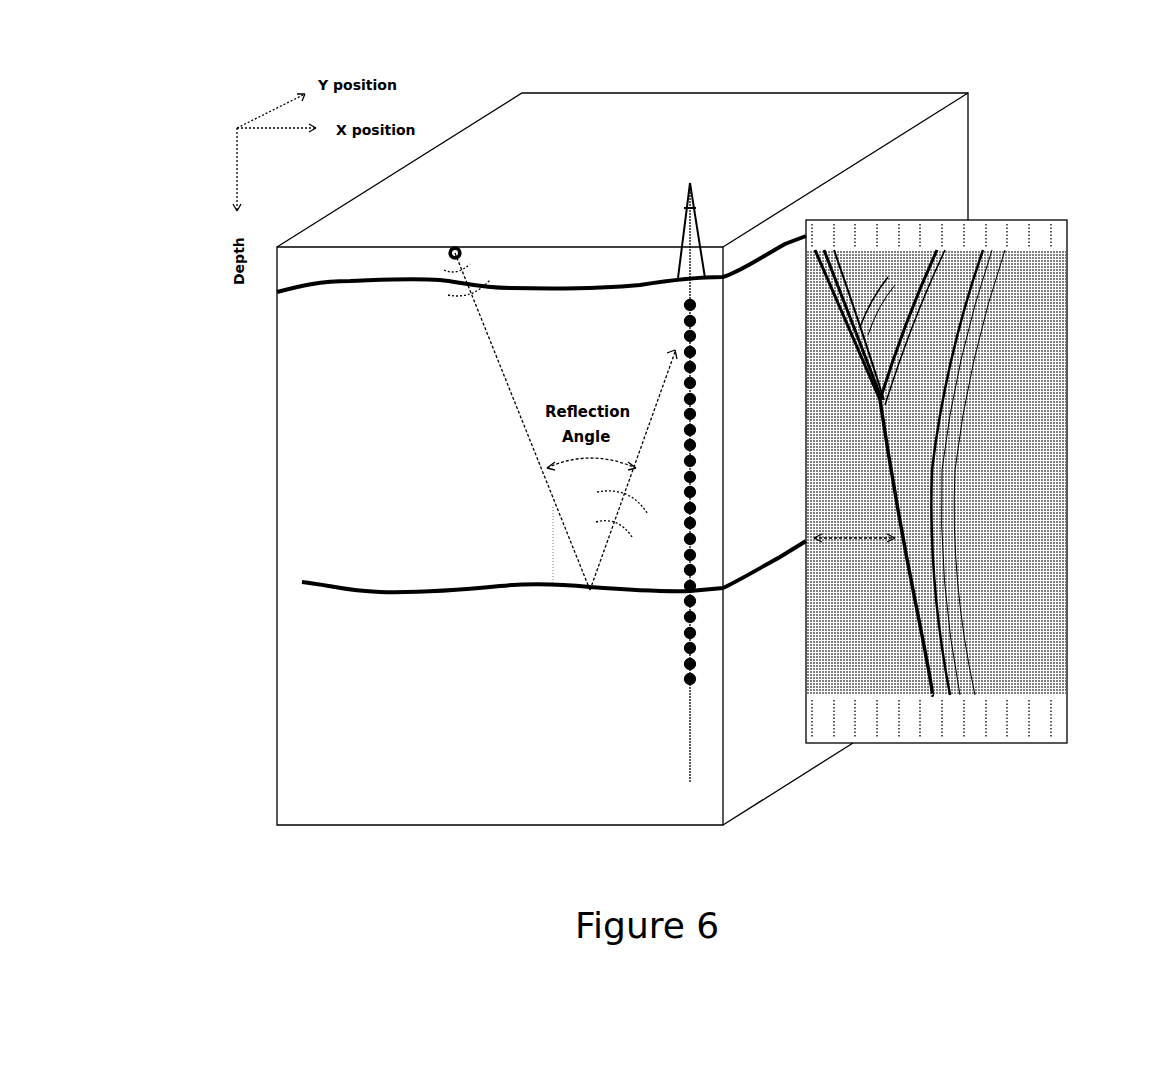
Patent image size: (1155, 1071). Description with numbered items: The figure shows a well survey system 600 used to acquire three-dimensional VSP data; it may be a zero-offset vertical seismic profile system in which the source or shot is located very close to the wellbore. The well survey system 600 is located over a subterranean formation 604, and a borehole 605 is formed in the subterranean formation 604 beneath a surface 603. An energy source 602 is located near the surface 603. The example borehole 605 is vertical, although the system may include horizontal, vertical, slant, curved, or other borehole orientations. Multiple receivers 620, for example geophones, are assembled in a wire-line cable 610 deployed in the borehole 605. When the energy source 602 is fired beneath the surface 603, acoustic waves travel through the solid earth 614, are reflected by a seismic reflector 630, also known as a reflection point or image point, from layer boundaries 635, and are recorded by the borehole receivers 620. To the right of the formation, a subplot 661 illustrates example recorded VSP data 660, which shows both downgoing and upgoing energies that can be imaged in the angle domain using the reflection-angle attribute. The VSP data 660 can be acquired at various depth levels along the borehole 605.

The well survey system 600 is at (167, 90).
The energy source 602 is at (457, 246).
The surface 603 is at (375, 232).
The subterranean formation 604 is at (522, 421).
The borehole 605 is at (690, 731).
The wire-line cable 610 is at (723, 555).
The solid earth 614 is at (310, 690).
The receivers 620 is at (697, 332).
The seismic reflector 630 is at (588, 622).
The layer boundaries 635 is at (357, 584).
The VSP data 660 is at (1030, 219).
The subplot 661 is at (1090, 382).